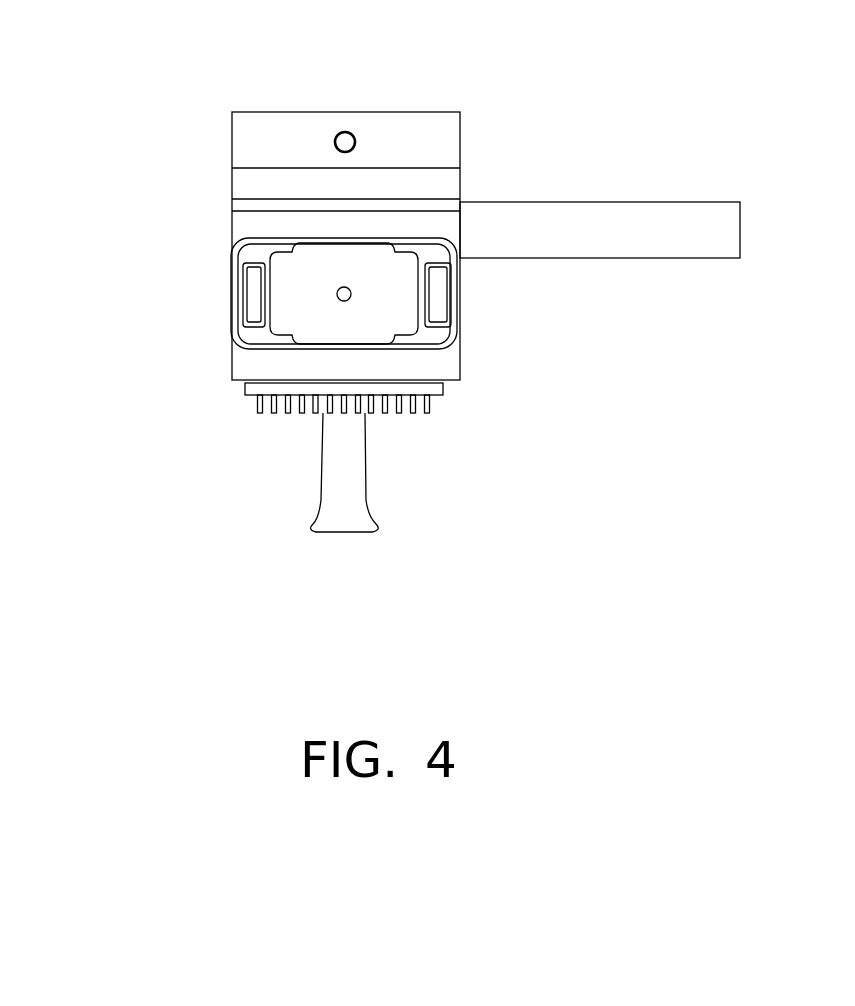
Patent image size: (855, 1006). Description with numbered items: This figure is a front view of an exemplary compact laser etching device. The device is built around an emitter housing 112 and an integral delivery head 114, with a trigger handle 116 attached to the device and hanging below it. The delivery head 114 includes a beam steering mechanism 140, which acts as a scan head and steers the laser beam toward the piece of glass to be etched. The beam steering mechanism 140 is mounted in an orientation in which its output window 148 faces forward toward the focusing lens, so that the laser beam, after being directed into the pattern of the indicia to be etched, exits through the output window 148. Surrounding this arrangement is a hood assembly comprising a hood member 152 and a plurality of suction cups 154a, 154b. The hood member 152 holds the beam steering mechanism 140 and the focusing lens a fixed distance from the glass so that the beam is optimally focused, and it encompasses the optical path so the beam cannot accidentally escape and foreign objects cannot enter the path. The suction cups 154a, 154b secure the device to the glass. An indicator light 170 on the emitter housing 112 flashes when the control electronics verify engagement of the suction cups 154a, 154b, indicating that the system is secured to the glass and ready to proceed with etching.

The emitter housing 112 is at (462, 143).
The delivery head 114 is at (200, 275).
The trigger handle 116 is at (330, 478).
The beam steering mechanism 140 is at (243, 360).
The output window 148 is at (350, 298).
The hood member 152 is at (240, 246).
The suction cup 154a is at (250, 297).
The suction cup 154b is at (441, 293).
The indicator light 170 is at (350, 133).